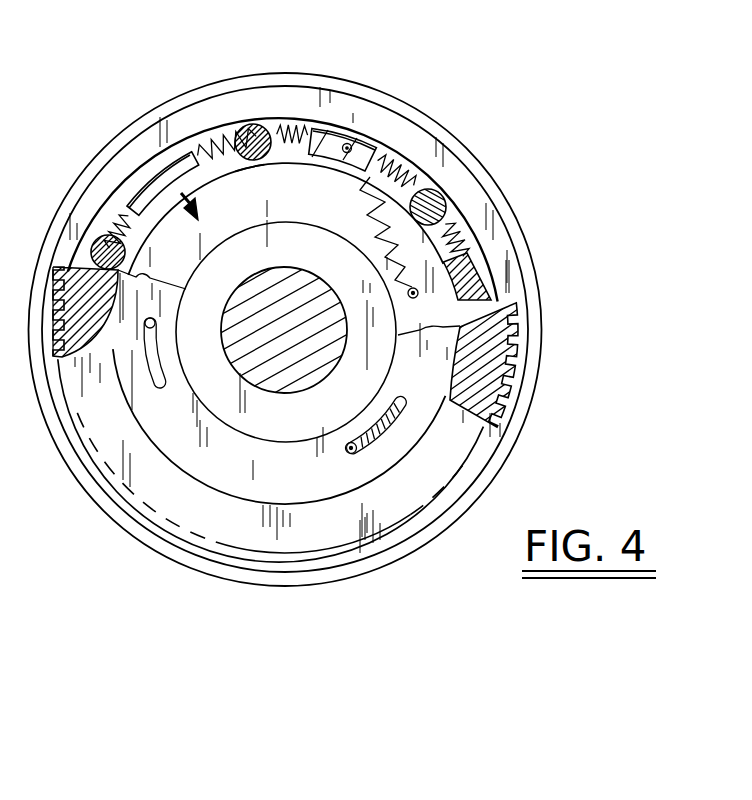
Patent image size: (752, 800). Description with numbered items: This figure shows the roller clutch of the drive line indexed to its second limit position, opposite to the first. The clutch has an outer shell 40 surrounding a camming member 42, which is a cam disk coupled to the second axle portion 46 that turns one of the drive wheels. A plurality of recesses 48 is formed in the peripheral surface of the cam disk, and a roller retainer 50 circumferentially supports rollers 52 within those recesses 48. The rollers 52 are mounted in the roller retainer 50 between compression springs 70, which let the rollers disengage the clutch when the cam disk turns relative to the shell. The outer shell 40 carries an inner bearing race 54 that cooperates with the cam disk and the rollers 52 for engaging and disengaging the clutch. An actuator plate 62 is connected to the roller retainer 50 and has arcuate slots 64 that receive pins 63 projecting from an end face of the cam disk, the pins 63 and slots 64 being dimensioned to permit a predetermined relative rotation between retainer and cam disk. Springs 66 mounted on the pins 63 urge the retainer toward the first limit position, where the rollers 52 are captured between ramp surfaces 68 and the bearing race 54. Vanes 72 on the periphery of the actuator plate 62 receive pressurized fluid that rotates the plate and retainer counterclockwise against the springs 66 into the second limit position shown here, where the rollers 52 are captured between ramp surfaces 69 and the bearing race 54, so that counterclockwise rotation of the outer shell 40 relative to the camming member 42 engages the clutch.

The outer shell 40 is at (392, 85).
The camming member 42 is at (157, 163).
The second axle portion 46 is at (297, 343).
The recesses 48 is at (303, 165).
The roller retainer 50 is at (357, 150).
The rollers 52 is at (253, 120).
The inner bearing race 54 is at (120, 203).
The actuator plate 62 is at (170, 516).
The pins 63 is at (350, 456).
The arcuate slots 64 is at (402, 417).
The springs 66 is at (380, 246).
The ramp surfaces 68 is at (347, 165).
The ramp surfaces 69 is at (240, 173).
The compression springs 70 is at (207, 143).
The vanes 72 is at (514, 321).